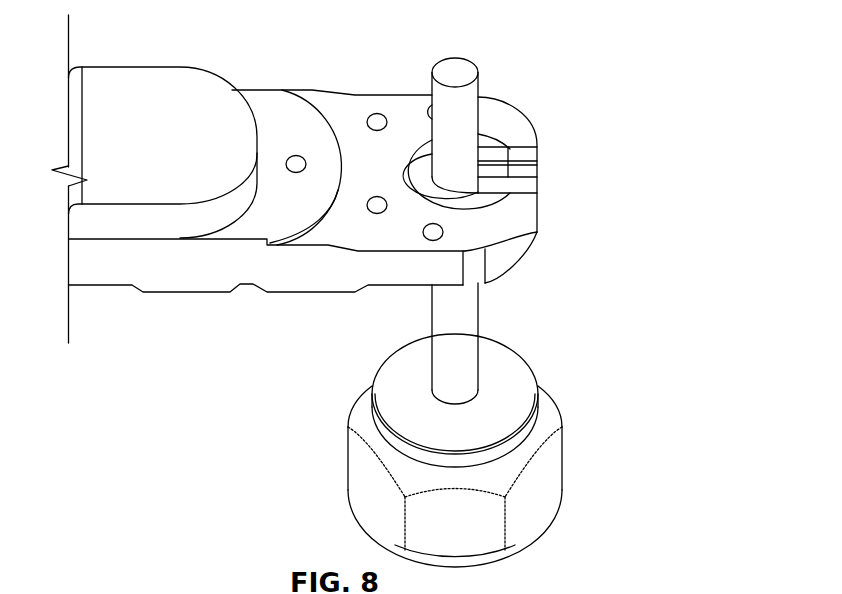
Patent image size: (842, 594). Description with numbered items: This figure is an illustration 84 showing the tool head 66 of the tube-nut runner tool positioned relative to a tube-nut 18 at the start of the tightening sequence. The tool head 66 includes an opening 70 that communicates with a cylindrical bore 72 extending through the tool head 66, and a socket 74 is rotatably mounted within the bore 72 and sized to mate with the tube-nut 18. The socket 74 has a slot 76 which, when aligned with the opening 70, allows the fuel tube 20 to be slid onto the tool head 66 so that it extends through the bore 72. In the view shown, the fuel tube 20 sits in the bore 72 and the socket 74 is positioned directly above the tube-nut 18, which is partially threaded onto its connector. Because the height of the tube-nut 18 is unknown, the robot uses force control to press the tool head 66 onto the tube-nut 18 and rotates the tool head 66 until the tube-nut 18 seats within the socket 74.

The tube-nut 18 is at (550, 468).
The fuel tube 20 is at (462, 97).
The tool head 66 is at (377, 101).
The opening 70 is at (553, 163).
The cylindrical bore 72 is at (488, 156).
The socket 74 is at (490, 165).
The slot 76 is at (492, 167).
The illustration 84 is at (367, 291).